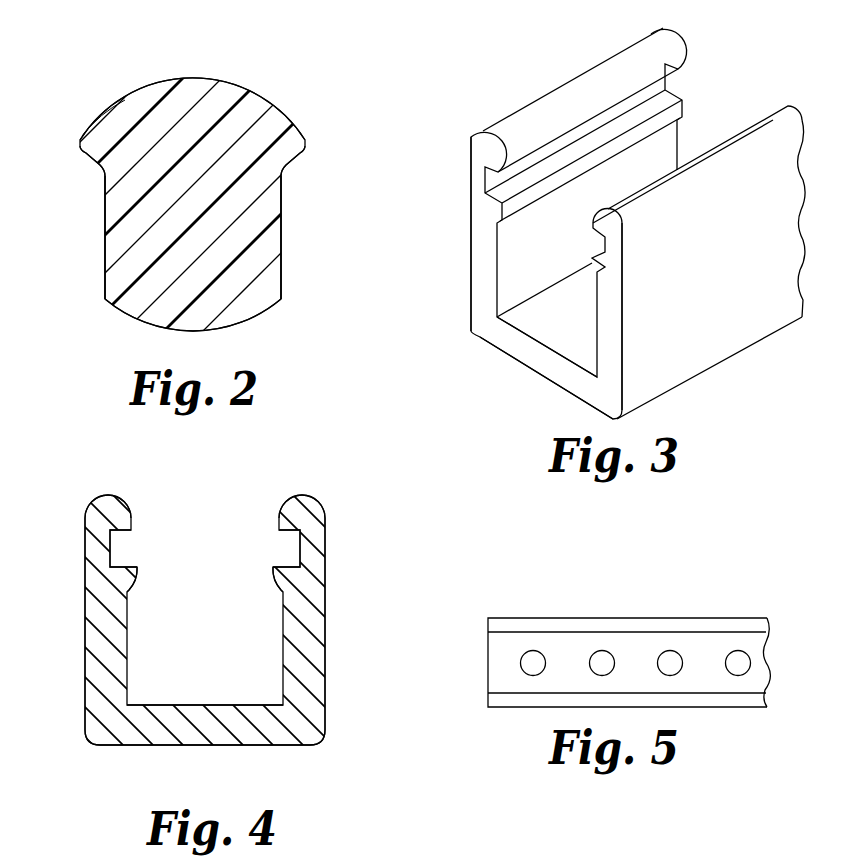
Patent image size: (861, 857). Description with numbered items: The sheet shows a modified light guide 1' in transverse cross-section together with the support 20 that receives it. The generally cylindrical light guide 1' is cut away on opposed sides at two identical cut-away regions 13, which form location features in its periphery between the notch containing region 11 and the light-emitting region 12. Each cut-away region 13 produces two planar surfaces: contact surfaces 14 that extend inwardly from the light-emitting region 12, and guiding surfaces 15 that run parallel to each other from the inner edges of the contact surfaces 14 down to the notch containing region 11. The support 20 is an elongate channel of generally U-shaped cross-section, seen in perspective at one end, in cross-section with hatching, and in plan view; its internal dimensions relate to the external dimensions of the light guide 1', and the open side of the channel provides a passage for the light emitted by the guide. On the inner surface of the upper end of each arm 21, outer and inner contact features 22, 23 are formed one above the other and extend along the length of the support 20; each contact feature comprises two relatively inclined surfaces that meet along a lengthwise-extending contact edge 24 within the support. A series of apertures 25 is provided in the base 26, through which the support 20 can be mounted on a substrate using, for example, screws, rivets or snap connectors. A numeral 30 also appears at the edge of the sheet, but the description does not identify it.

In FIG. 2, the modified light guide 1' is at (237, 170).
In FIG. 2, the notch containing region 11 is at (262, 316).
In FIG. 2, the light-emitting region 12 is at (274, 93).
In FIG. 2, the cut-away regions 13 is at (86, 274).
In FIG. 2, the contact surfaces 14 is at (96, 163).
In FIG. 2, the guiding surfaces 15 is at (106, 233).
In FIG. 3, the support 20 is at (736, 64).
In FIG. 4, the support 20 is at (332, 486).
In FIG. 5, the support 20 is at (712, 600).
In FIG. 3, the arm 21 is at (482, 259).
In FIG. 4, the arm 21 is at (92, 665).
In FIG. 4, the outer contact feature 22 is at (124, 525).
In FIG. 4, the inner contact feature 23 is at (128, 577).
In FIG. 4, the contact edge 24 is at (130, 530).
In FIG. 5, the apertures 25 is at (535, 660).
In FIG. 3, the base 26 is at (529, 359).
In FIG. 4, the base 26 is at (217, 735).
In FIG. 5, the base 26 is at (500, 660).
In FIG. 5, the element 30 is at (410, 856).